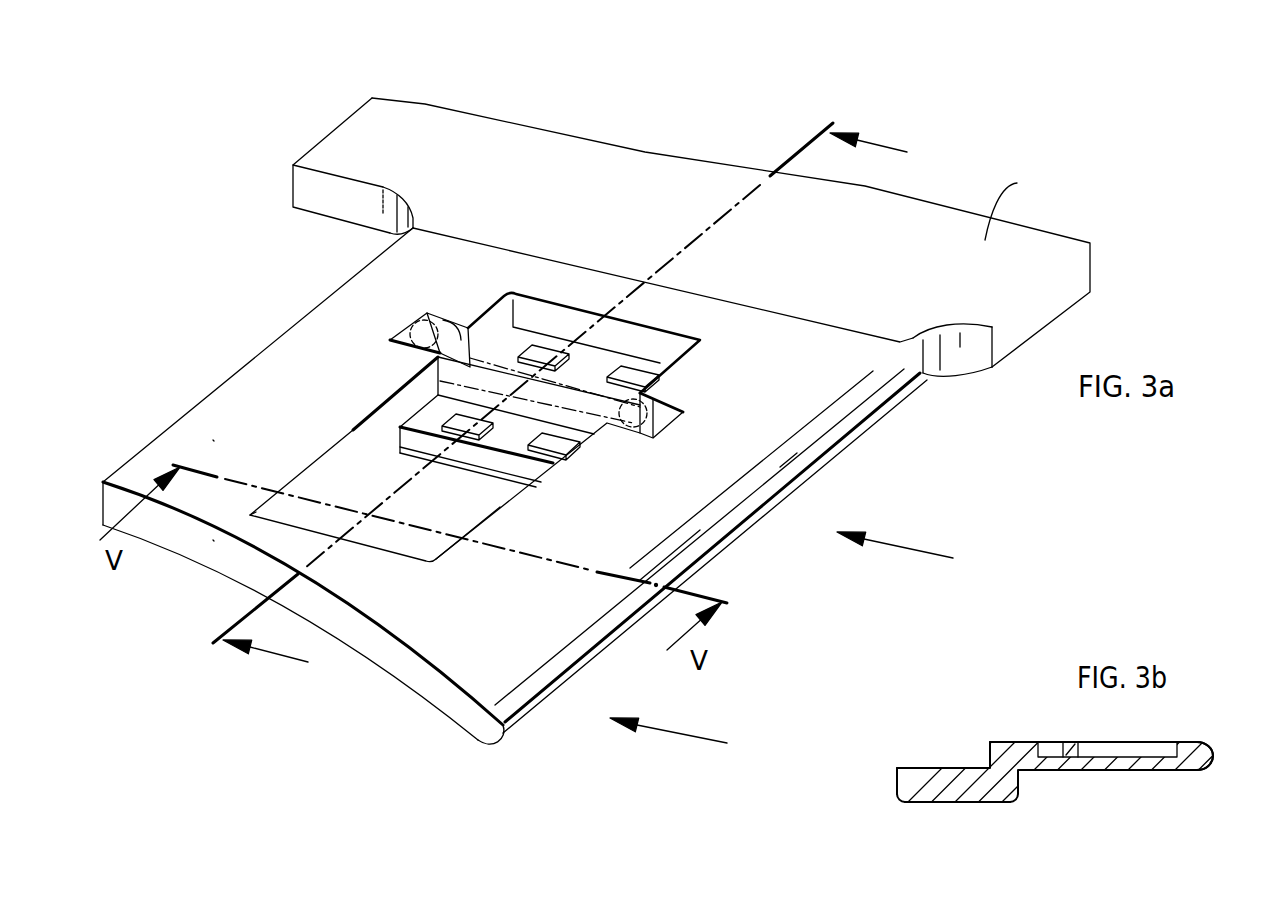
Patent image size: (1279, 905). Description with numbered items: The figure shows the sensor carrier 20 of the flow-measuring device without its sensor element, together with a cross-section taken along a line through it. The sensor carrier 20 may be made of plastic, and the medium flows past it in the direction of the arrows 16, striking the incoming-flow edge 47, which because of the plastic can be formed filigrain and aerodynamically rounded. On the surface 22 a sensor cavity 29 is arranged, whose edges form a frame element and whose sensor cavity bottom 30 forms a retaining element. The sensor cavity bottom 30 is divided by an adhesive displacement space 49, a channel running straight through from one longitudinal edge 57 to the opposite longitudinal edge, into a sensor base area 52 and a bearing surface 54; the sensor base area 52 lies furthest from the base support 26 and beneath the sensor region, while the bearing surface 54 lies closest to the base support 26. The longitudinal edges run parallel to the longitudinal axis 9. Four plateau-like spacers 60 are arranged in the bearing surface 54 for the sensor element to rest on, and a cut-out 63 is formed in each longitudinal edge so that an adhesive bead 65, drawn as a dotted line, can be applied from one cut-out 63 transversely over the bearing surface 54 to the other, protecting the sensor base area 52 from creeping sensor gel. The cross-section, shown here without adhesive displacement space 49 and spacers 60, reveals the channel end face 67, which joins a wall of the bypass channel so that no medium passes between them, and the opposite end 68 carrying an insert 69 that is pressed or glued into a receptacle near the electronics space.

In FIG. 3A, the longitudinal axis 9 is at (672, 270).
In FIG. 3A, the arrows of main flow direction 16 is at (930, 552).
In FIG. 3A, the sensor carrier 20 is at (470, 657).
In FIG. 3B, the sensor carrier 20 is at (1005, 793).
In FIG. 3A, the surface 22 is at (213, 440).
In FIG. 3B, the surface 22 is at (1025, 742).
In FIG. 3A, the base support 26 is at (1015, 205).
In FIG. 3A, the sensor cavity 29 is at (333, 465).
In FIG. 3B, the sensor cavity 29 is at (1158, 750).
In FIG. 3A, the sensor cavity bottom 30 is at (395, 393).
In FIG. 3A, the incoming-flow edge 47 is at (707, 543).
In FIG. 3A, the adhesive displacement space 49 is at (387, 437).
In FIG. 3A, the sensor base area 52 is at (437, 535).
In FIG. 3A, the bearing surface 54 is at (513, 347).
In FIG. 3A, the longitudinal edge 57 is at (400, 407).
In FIG. 3A, the spacers 60 is at (548, 352).
In FIG. 3A, the cut-out 63 is at (455, 332).
In FIG. 3B, the cut-out 63 is at (1070, 762).
In FIG. 3A, the adhesive bead 65 is at (678, 432).
In FIG. 3A, the channel end face 67 is at (213, 540).
In FIG. 3B, the channel end face 67 is at (1218, 758).
In FIG. 3B, the end 68 is at (897, 787).
In FIG. 3B, the insert 69 is at (933, 793).